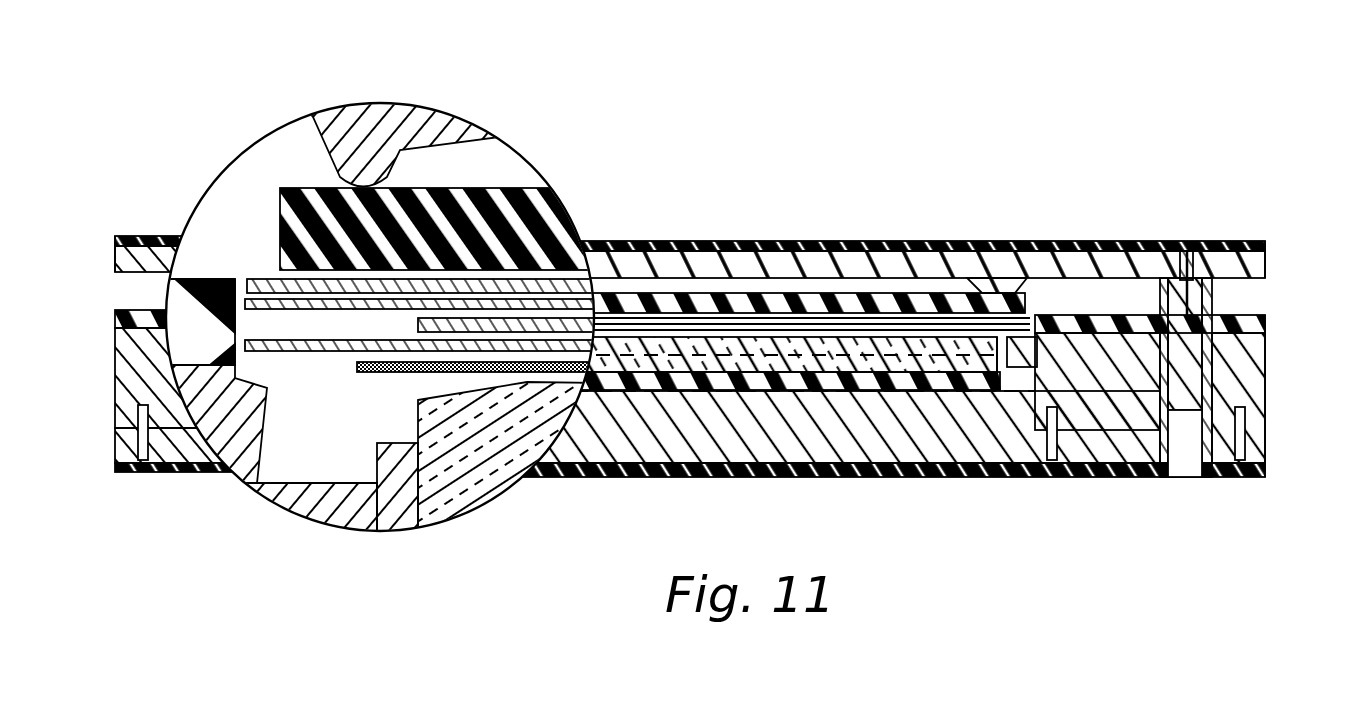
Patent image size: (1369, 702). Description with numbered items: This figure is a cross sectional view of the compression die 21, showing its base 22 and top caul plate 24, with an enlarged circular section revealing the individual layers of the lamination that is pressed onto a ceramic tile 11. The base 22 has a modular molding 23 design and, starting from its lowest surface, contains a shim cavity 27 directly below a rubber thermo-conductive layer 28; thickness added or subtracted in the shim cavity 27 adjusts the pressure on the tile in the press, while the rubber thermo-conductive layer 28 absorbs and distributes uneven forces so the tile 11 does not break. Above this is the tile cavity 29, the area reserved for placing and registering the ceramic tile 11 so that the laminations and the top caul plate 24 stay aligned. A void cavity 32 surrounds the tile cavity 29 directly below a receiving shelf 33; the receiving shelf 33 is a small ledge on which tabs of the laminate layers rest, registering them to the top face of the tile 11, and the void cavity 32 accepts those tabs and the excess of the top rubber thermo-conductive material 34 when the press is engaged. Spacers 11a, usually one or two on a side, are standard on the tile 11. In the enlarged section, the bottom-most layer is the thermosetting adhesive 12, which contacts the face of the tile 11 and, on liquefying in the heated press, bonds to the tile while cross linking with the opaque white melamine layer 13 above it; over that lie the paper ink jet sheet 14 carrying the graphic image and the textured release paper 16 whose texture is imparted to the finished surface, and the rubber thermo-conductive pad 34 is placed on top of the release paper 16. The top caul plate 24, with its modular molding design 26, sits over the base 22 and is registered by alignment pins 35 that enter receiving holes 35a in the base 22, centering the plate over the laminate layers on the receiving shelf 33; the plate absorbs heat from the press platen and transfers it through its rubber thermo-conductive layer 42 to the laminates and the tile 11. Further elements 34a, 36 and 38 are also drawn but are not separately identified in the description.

The ceramic tile 11 is at (915, 362).
The spacers 11a is at (1015, 375).
The thermosetting adhesive 12 is at (360, 372).
The opaque white melamine layer 13 is at (287, 353).
The paper ink jet sheet 14 is at (418, 325).
The textured release paper 16 is at (263, 281).
The compression die 21 is at (1335, 282).
The base 22 is at (117, 441).
The modular molding 23 is at (117, 360).
The top caul plate 24 is at (1266, 258).
The modular molding design 26 is at (1003, 272).
The shim cavity 27 is at (745, 393).
The rubber thermo-conductive layer 28 is at (810, 381).
The tile cavity 29 is at (838, 358).
The void cavity 32 is at (213, 447).
The receiving shelf 33 is at (1020, 367).
The rubber thermo-conductive pad 34 is at (915, 300).
The seal ring 34a is at (120, 310).
The alignment pins 35 is at (1207, 304).
The receiving hole 35a is at (1186, 477).
The block 36 is at (1268, 372).
The base 38 is at (652, 468).
The rubber thermo-conductive layer 42 is at (746, 247).